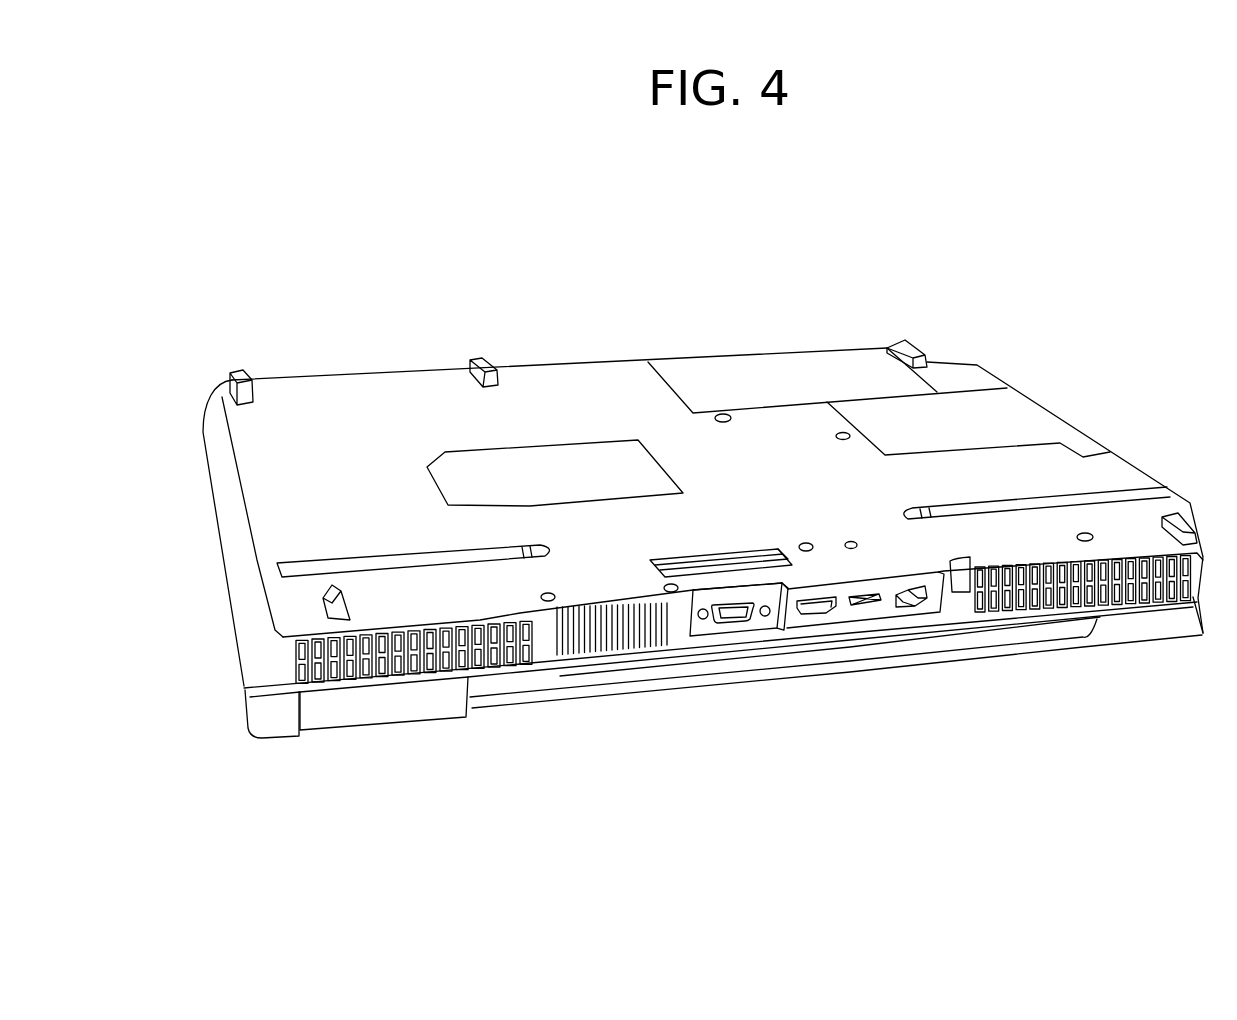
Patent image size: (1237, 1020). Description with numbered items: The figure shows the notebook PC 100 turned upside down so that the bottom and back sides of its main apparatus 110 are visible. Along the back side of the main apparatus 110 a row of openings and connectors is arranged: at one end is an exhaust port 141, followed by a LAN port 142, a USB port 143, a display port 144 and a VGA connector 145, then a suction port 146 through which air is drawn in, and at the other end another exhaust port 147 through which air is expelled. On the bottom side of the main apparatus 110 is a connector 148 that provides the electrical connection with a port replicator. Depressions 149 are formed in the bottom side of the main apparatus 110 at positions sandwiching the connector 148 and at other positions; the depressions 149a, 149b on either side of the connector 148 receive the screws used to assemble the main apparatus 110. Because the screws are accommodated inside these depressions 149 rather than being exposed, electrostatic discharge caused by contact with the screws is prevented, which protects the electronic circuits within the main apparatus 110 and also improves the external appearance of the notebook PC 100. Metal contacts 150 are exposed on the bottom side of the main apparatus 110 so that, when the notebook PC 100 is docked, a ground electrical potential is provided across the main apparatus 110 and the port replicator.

The notebook PC 100 is at (977, 302).
The main apparatus 110 is at (1036, 413).
The exhaust port 141 is at (1063, 594).
The LAN port 142 is at (915, 605).
The USB port 143 is at (865, 605).
The display port 144 is at (815, 608).
The VGA connector 145 is at (733, 612).
The suction port 146 is at (620, 640).
The exhaust port 147 is at (392, 657).
The connector 148 is at (723, 560).
The depressions 149 is at (713, 398).
The depression 149a is at (670, 584).
The depression 149b is at (806, 543).
The metal contacts 150 is at (851, 541).